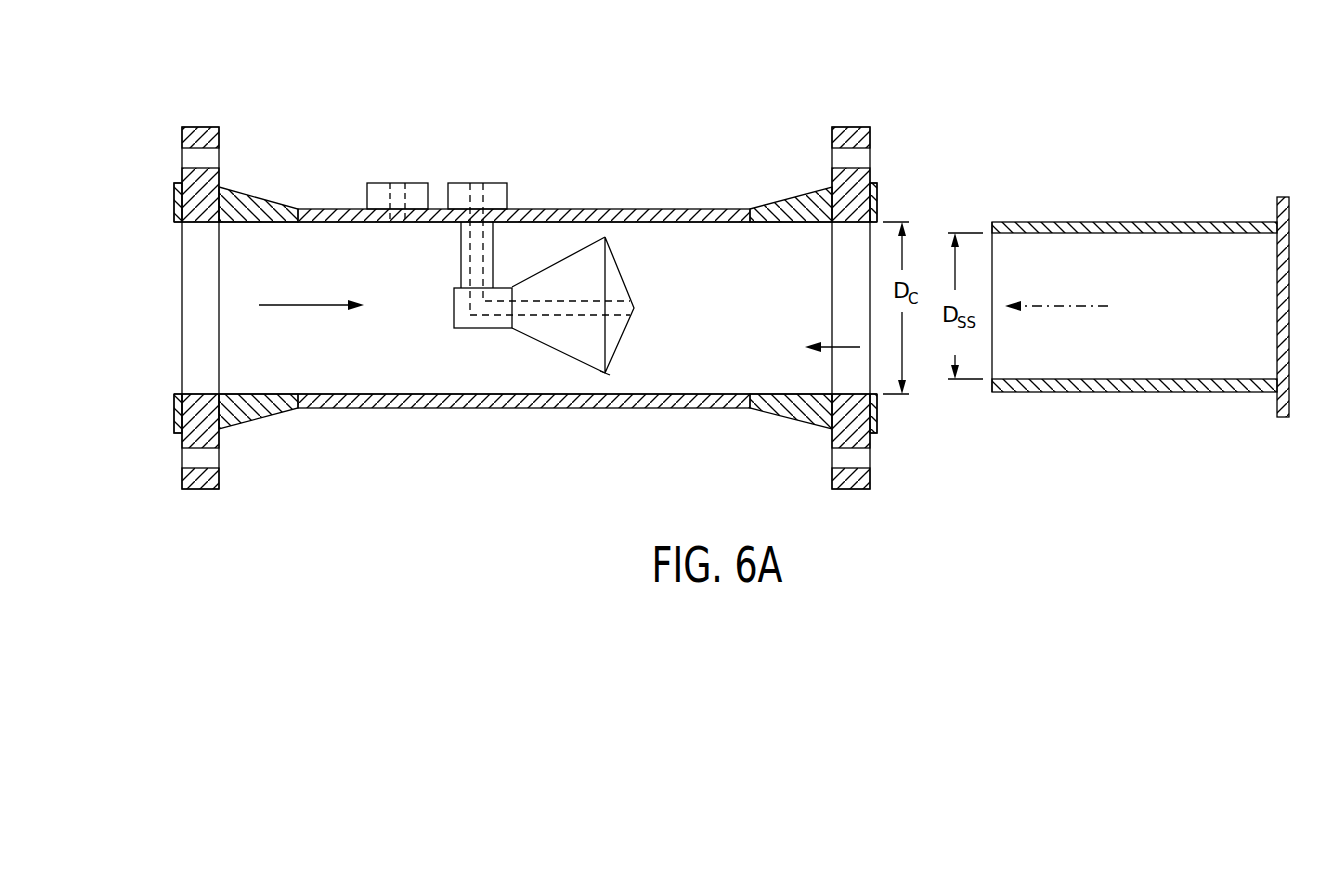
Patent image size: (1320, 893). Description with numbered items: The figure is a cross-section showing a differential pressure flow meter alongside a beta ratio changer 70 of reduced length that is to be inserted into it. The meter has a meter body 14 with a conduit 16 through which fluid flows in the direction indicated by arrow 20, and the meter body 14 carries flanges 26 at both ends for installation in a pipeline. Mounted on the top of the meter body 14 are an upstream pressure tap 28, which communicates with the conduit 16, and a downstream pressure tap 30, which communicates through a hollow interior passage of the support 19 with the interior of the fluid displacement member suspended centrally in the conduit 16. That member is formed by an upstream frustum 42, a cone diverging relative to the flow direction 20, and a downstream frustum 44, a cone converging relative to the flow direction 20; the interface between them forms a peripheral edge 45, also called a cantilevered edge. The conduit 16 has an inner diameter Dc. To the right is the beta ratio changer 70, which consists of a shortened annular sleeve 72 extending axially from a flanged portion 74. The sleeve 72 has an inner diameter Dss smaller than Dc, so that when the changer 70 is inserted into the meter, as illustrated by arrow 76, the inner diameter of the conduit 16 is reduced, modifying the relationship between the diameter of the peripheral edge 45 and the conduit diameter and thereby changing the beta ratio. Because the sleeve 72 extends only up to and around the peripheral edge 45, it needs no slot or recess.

The meter body 14 is at (518, 408).
The conduit 16 is at (860, 347).
The support 19 is at (461, 254).
The fluid flow direction 20 is at (305, 305).
The flanges 26 is at (205, 127).
The upstream pressure tap 28 is at (367, 190).
The downstream pressure tap 30 is at (507, 190).
The upstream frustum 42 is at (533, 345).
The downstream frustum 44 is at (626, 250).
The peripheral edge 45 is at (605, 373).
The beta ratio changer 70 is at (1140, 223).
The shortened annular sleeve 72 is at (1133, 222).
The flanged portion 74 is at (1275, 212).
The insertion arrow 76 is at (1055, 306).